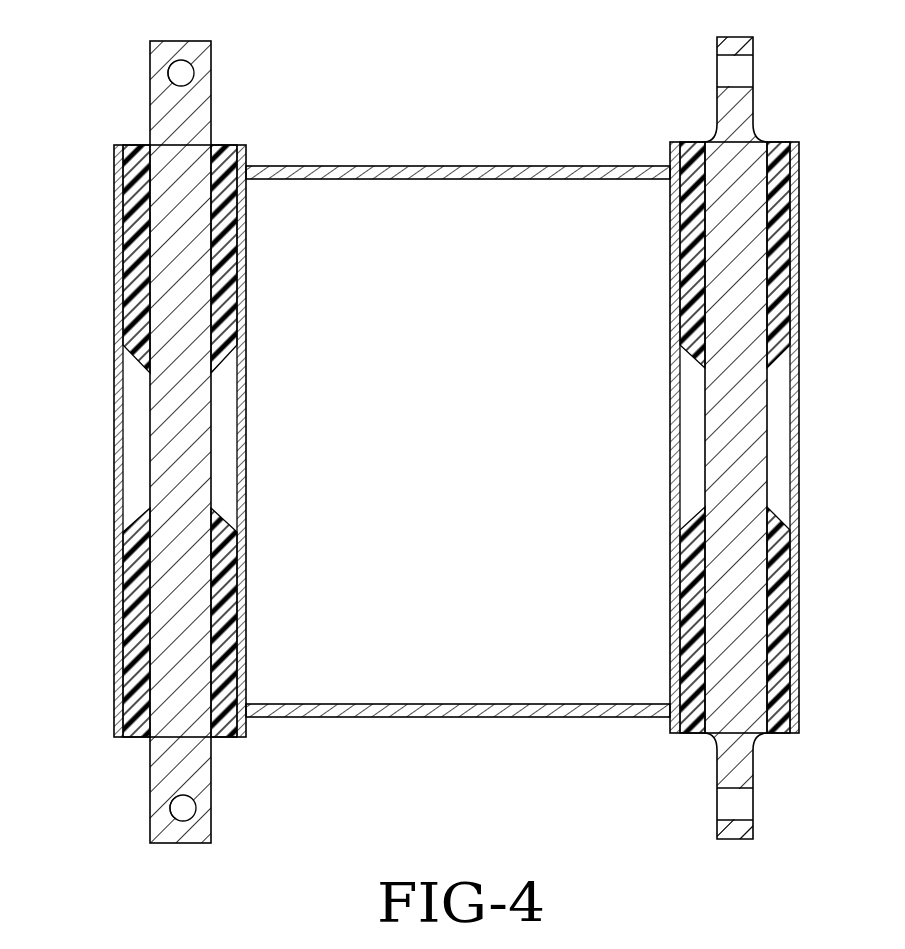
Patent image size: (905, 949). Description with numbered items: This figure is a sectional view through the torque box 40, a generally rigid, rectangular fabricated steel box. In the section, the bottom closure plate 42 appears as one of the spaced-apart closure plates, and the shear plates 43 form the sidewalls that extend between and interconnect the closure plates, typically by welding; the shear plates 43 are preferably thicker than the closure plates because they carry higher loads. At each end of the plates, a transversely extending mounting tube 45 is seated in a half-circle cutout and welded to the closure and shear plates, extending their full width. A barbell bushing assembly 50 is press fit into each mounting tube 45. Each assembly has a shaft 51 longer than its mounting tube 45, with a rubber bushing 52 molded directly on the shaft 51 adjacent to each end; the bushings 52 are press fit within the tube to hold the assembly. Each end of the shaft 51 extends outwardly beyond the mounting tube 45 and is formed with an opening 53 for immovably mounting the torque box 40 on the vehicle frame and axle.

The torque box 40 is at (483, 166).
The bottom closure plate 42 is at (448, 450).
The shear plate 43 is at (396, 166).
The mounting tube 45 is at (119, 425).
The barbell bushing assembly 50 is at (211, 120).
The shaft 51 is at (168, 118).
The bushing 52 is at (135, 272).
The opening 53 is at (190, 68).